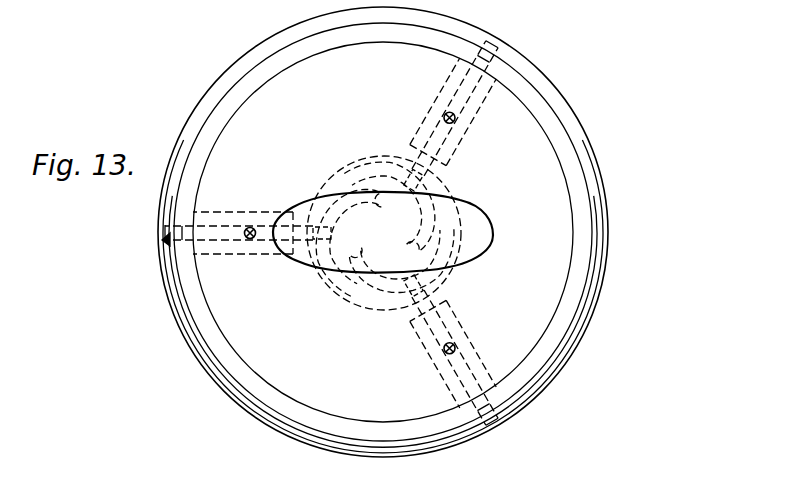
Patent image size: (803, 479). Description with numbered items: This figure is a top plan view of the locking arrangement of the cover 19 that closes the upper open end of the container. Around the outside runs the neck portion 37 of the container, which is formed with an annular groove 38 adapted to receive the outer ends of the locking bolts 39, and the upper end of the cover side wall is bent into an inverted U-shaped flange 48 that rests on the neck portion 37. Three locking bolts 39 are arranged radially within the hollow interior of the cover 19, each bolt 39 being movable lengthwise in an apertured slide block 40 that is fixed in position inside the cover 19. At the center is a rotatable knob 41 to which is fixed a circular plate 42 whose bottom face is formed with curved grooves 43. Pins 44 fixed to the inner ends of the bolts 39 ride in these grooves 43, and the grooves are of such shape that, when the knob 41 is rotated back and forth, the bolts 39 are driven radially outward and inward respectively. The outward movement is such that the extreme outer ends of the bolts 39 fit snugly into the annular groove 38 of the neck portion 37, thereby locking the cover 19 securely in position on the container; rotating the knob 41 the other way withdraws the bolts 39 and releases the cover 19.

The cover 19 is at (548, 268).
The neck portion 37 is at (604, 211).
The groove 38 is at (553, 97).
The inverted U-shaped flange 48 is at (568, 158).
The locking bolts 39 is at (498, 48).
The slide block 40 is at (470, 126).
The rotatable knob 41 is at (496, 232).
The circular plate 42 is at (448, 190).
The grooves 43 is at (428, 220).
The pins 44 is at (409, 180).